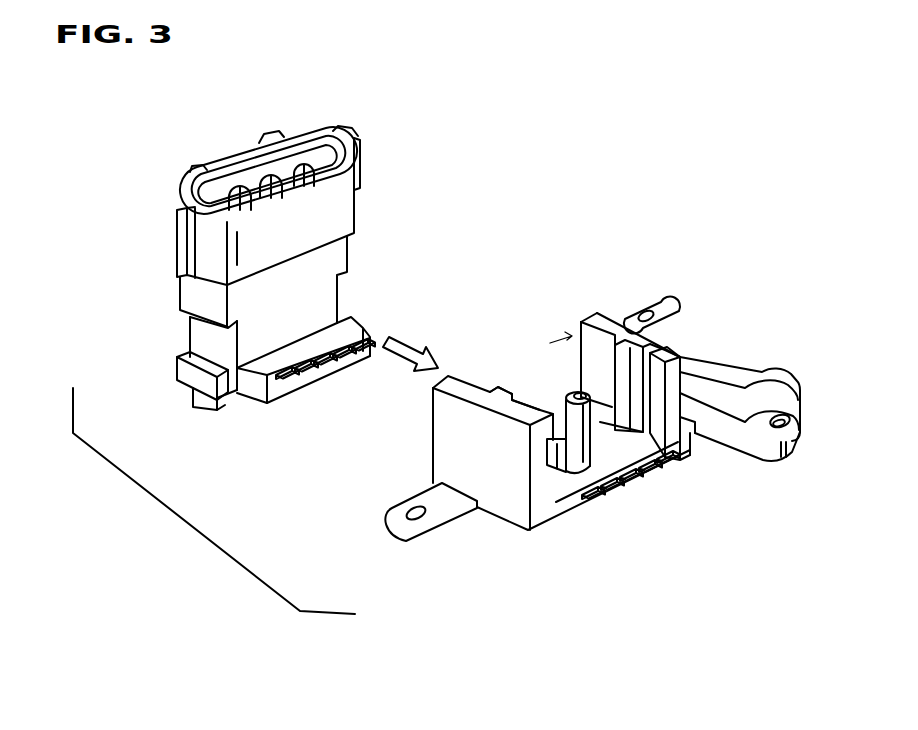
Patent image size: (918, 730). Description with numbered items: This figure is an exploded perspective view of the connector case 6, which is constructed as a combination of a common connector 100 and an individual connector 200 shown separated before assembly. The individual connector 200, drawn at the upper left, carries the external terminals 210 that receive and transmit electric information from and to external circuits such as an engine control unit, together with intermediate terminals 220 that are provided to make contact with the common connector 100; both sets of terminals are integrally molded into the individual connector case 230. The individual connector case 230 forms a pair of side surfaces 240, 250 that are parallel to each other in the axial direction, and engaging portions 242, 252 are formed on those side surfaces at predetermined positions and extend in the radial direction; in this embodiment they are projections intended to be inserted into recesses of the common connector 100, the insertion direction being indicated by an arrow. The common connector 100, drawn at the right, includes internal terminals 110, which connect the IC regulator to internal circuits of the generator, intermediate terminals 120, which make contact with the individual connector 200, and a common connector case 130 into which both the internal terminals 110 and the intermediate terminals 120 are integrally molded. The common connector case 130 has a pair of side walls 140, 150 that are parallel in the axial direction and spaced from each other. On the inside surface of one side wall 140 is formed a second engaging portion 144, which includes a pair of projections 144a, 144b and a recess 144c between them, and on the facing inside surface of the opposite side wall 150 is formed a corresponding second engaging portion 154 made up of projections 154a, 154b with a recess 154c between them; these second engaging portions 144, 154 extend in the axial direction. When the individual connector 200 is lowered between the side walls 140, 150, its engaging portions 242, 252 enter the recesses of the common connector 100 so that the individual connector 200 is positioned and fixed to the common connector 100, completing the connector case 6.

The connector case 6 is at (590, 172).
The individual connector 200 is at (380, 144).
The external terminals 210 is at (239, 190).
The intermediate terminals 220 is at (327, 373).
The individual connector case 230 is at (270, 320).
The side surface 240 is at (356, 292).
The engaging portion 242 is at (355, 318).
The side surface 250 is at (210, 342).
The engaging portion 252 is at (188, 378).
The common connector 100 is at (693, 250).
The internal terminals 110 is at (394, 518).
The intermediate terminals 120 is at (645, 482).
The common connector case 130 is at (510, 505).
The side wall 140 is at (601, 318).
The second engaging portion 144 is at (676, 360).
The projection 144a is at (622, 367).
The projection 144b is at (660, 380).
The recess 144c is at (690, 445).
The side wall 150 is at (447, 430).
The second engaging portion 154 is at (528, 402).
The projection 154a is at (520, 384).
The projection 154b is at (553, 445).
The recess 154c is at (546, 378).